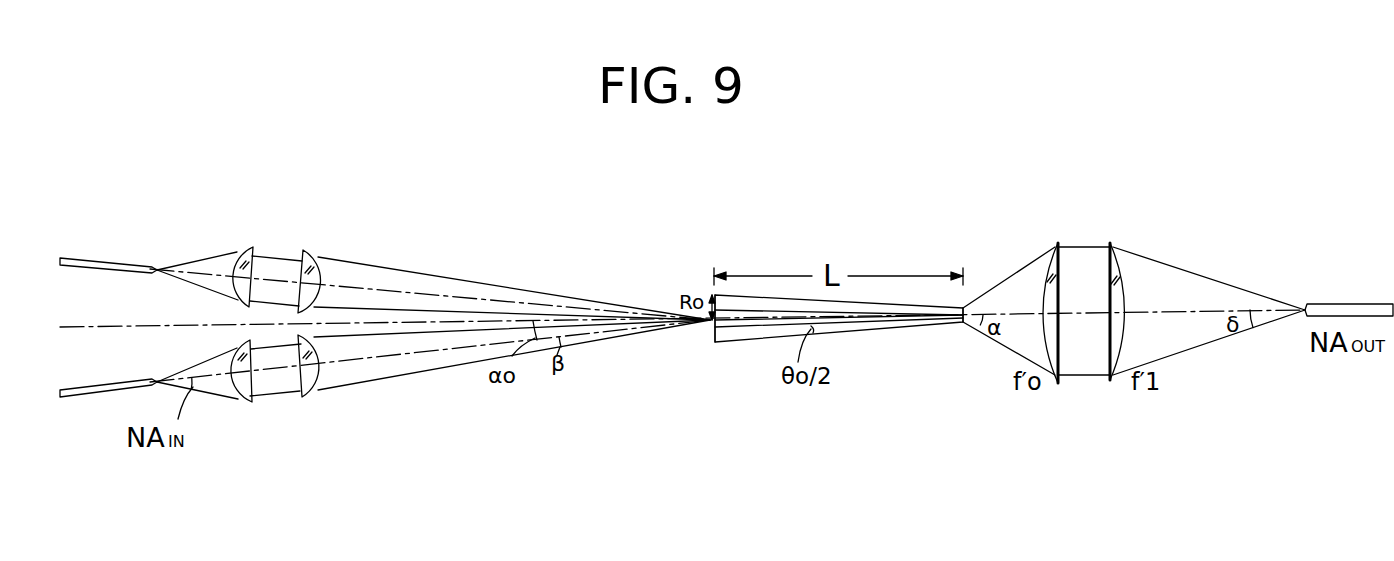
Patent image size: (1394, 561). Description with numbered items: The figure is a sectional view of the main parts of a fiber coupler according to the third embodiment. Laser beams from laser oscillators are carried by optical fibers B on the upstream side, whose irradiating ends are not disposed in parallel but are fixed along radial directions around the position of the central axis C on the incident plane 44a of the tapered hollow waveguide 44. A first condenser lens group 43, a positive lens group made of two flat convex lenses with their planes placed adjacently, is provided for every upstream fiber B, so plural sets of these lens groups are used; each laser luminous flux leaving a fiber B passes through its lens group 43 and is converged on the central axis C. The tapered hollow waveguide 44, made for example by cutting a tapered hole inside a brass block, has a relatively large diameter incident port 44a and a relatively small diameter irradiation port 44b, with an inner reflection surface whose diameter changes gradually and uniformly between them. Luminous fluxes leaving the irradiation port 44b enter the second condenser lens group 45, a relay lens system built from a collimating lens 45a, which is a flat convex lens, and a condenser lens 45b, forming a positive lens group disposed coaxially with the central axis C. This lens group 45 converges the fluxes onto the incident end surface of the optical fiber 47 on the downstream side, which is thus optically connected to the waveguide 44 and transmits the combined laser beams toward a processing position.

The first condenser lens group 43 is at (311, 252).
The tapered hollow waveguide 44 is at (745, 343).
The incident port 44a is at (712, 336).
The irradiation port 44b is at (966, 324).
The second condenser lens group 45 is at (1095, 357).
The collimating lens 45a is at (1053, 378).
The condenser lens 45b is at (1111, 381).
The optical fiber on the downstream side 47 is at (1342, 303).
The optical fibers on the upstream side B is at (93, 259).
The central axis C is at (867, 318).